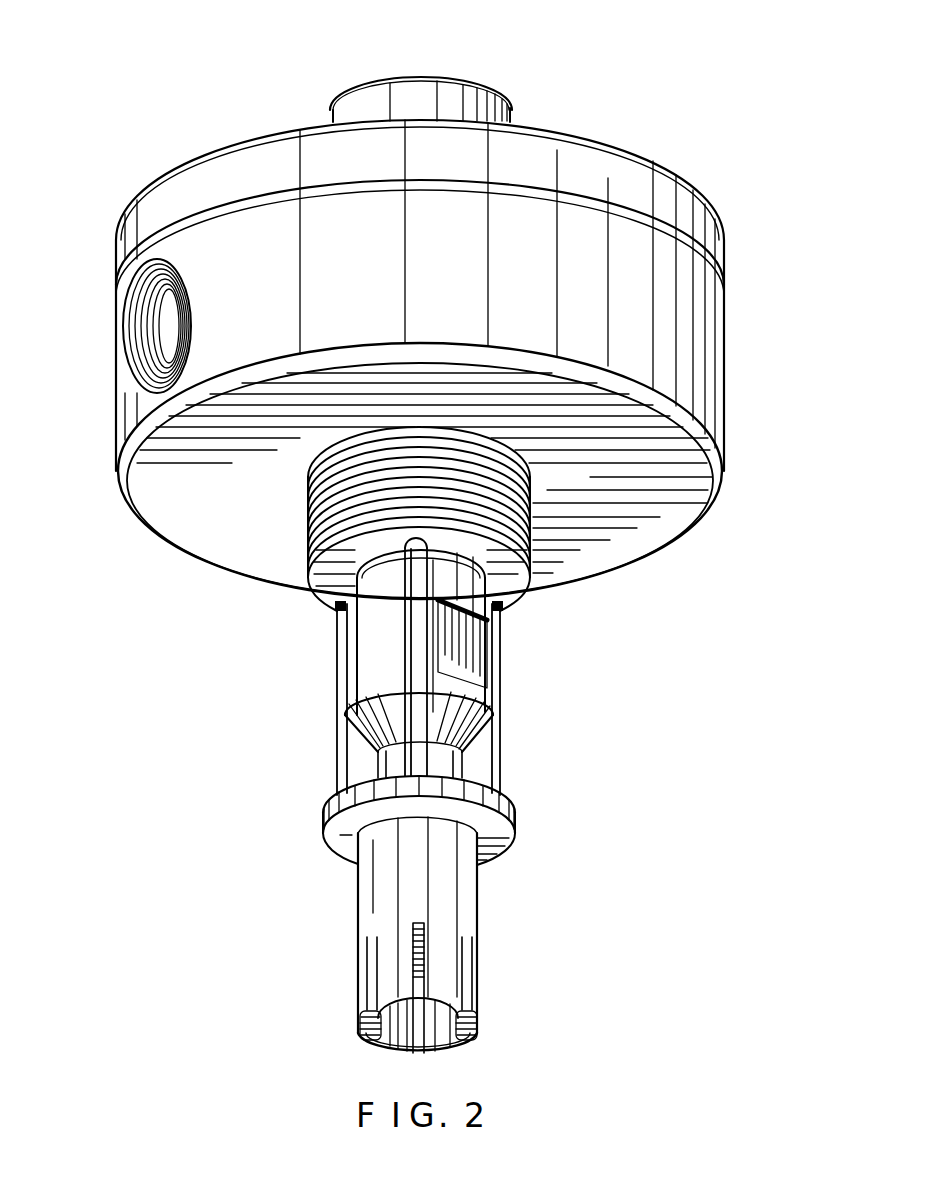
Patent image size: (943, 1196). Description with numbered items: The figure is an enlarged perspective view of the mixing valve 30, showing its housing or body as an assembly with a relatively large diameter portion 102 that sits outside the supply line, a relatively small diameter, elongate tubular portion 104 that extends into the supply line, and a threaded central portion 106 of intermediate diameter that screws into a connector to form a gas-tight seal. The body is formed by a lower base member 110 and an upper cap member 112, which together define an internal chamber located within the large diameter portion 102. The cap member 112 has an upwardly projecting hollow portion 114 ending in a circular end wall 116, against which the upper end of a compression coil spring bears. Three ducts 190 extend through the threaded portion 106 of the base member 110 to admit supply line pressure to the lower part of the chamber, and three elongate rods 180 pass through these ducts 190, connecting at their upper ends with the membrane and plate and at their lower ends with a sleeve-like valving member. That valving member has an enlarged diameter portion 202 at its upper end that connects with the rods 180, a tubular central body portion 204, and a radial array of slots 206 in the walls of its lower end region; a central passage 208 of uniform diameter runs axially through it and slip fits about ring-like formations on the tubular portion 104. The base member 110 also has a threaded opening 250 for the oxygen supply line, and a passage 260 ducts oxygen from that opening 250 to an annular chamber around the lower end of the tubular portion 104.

The mixing valve 30 is at (671, 75).
The large diameter portion 102 is at (737, 305).
The tubular portion 104 is at (503, 730).
The threaded central portion 106 is at (297, 540).
The base member 110 is at (127, 421).
The cap member 112 is at (172, 183).
The hollow portion 114 is at (455, 101).
The end wall 116 is at (414, 78).
The rods 180 is at (343, 762).
The ducts 190 is at (319, 641).
The enlarged diameter portion 202 is at (513, 820).
The tubular central body portion 204 is at (464, 898).
The slots 206 is at (407, 939).
The central passage 208 is at (392, 1047).
The threaded opening 250 is at (150, 345).
The passage 260 is at (160, 316).